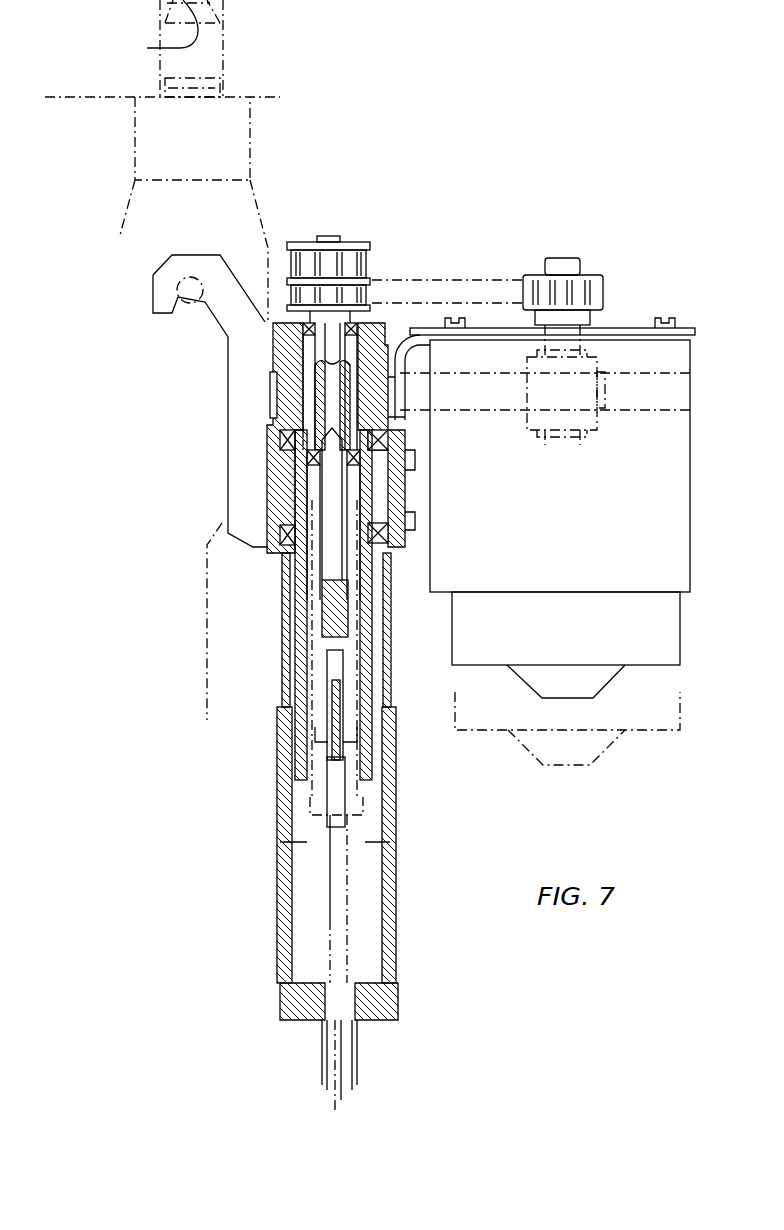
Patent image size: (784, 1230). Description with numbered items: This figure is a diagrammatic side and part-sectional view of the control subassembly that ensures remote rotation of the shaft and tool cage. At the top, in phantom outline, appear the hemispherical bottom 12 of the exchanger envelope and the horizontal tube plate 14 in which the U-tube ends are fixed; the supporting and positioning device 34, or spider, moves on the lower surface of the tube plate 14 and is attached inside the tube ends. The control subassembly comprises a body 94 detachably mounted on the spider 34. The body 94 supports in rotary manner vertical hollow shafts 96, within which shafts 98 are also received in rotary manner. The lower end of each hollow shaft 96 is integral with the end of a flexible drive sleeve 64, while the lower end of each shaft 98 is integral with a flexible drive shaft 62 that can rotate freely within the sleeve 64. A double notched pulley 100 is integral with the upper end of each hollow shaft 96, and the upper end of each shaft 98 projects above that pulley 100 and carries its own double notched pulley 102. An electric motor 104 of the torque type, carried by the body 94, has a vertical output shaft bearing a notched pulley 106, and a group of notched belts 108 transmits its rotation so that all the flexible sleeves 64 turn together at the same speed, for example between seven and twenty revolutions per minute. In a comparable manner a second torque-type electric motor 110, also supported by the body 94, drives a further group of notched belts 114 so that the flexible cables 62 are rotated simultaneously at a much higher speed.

The hemispherical bottom 12 is at (164, 34).
The horizontal tube plate 14 is at (310, 68).
The supporting and positioning device 34 is at (262, 218).
The flexible drive shaft 62 is at (333, 720).
The flexible drive sleeve 64 is at (328, 857).
The body 94 is at (623, 332).
The vertical hollow shafts 96 is at (302, 590).
The shafts 98 is at (268, 440).
The double notched pulley 100 is at (275, 385).
The double notched pulley 102 is at (341, 261).
The electric motor 104 is at (670, 718).
The notched pulley 106 is at (587, 387).
The notched belts 108 is at (273, 352).
The electric motor 110 is at (666, 562).
The notched belts 114 is at (374, 262).